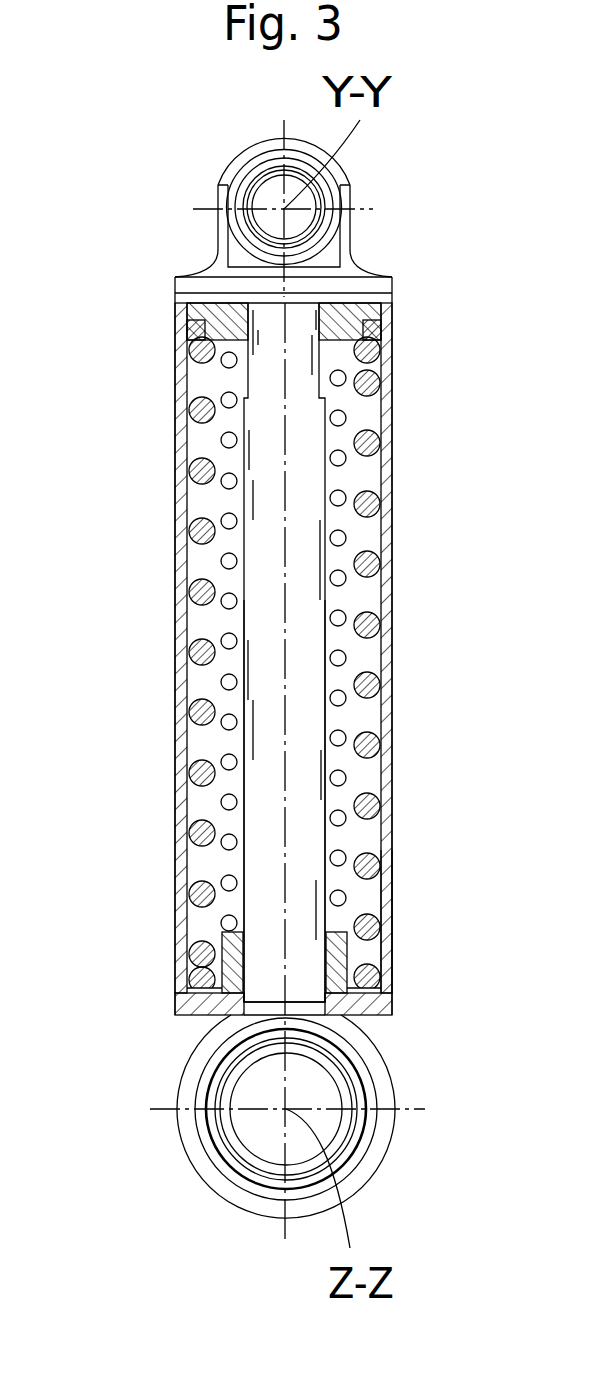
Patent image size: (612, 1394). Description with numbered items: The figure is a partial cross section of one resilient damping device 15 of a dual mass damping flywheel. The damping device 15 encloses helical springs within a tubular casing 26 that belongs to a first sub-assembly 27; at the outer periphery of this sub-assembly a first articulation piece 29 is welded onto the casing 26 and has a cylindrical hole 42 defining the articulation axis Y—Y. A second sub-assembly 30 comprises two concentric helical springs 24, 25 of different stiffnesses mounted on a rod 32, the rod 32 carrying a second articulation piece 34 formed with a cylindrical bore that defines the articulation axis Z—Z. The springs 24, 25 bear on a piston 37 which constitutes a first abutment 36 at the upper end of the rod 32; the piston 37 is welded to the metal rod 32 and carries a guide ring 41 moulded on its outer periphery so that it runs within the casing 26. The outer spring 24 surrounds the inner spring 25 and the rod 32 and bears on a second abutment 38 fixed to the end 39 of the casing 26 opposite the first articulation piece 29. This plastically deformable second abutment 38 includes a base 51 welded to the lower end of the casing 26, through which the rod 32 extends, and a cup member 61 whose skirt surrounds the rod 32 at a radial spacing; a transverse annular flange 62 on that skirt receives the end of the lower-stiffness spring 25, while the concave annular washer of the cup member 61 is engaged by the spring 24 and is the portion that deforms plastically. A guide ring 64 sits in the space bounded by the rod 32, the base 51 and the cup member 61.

The damping device 15 is at (156, 670).
The helical spring 24 is at (192, 472).
The helical spring 25 is at (221, 562).
The casing 26 is at (393, 467).
The first sub-assembly 27 is at (163, 750).
The first articulation piece 29 is at (347, 170).
The second sub-assembly 30 is at (232, 862).
The rod 32 is at (316, 597).
The second articulation piece 34 is at (393, 1143).
The first abutment 36 is at (394, 323).
The piston 37 is at (185, 320).
The second abutment 38 is at (163, 1005).
The end of the casing 39 is at (393, 913).
The guide ring 41 is at (175, 335).
The cylindrical hole 42 is at (262, 190).
The base 51 is at (383, 1003).
The cup member 61 is at (362, 957).
The transverse annular flange 62 is at (210, 932).
The guide ring 64 is at (203, 968).